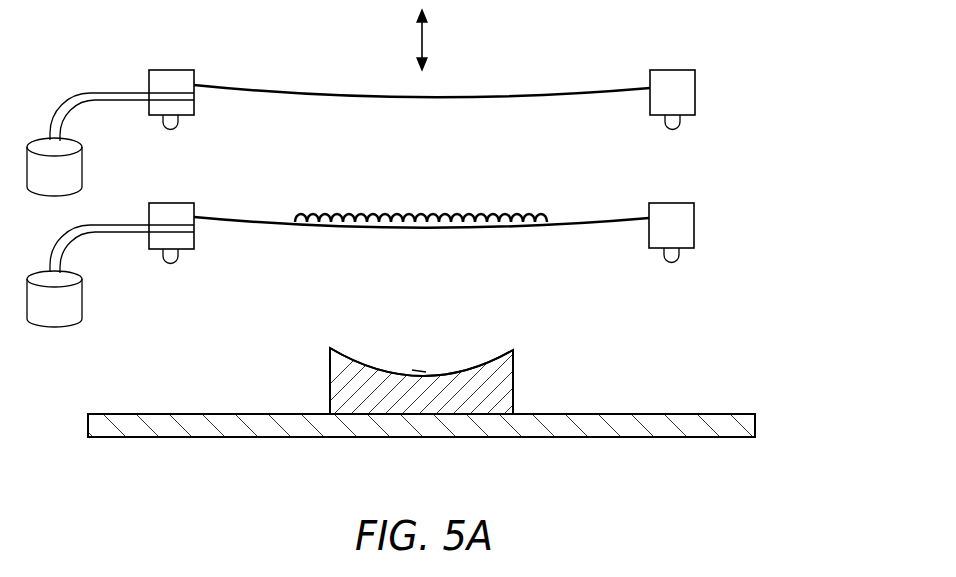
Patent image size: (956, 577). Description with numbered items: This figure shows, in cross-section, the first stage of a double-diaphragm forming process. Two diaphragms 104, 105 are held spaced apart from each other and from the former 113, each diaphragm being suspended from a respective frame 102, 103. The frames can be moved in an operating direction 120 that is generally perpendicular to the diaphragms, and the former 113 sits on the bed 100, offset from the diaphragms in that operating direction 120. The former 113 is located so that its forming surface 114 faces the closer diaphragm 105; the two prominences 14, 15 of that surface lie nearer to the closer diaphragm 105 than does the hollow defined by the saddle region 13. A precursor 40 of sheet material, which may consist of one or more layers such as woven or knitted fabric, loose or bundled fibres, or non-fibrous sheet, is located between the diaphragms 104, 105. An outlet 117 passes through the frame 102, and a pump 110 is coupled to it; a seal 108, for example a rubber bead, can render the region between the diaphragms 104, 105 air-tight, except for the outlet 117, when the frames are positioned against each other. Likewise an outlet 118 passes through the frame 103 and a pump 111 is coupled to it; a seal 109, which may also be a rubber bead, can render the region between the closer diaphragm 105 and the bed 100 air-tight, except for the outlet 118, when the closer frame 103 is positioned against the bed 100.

The bed 100 is at (728, 437).
The former 113 is at (513, 378).
The forming surface 114 is at (482, 366).
The saddle region 13 is at (417, 368).
The prominence 14 is at (330, 348).
The prominence 15 is at (513, 350).
The frame 102 is at (170, 70).
The frame 103 is at (170, 203).
The diaphragm 104 is at (600, 88).
The diaphragm 105 is at (601, 217).
The precursor 40 is at (500, 214).
The seal 108 is at (178, 125).
The seal 109 is at (178, 258).
The pump 110 is at (82, 172).
The pump 111 is at (82, 305).
The outlet 117 is at (194, 97).
The outlet 118 is at (194, 230).
The operating direction 120 is at (424, 40).